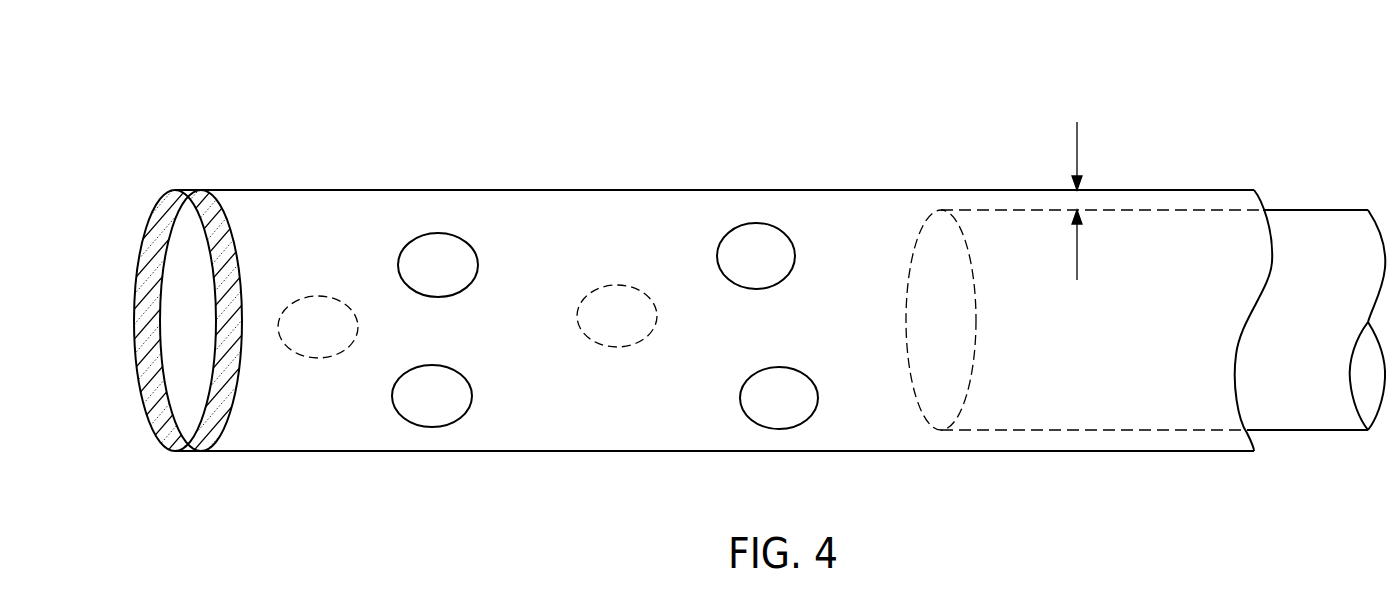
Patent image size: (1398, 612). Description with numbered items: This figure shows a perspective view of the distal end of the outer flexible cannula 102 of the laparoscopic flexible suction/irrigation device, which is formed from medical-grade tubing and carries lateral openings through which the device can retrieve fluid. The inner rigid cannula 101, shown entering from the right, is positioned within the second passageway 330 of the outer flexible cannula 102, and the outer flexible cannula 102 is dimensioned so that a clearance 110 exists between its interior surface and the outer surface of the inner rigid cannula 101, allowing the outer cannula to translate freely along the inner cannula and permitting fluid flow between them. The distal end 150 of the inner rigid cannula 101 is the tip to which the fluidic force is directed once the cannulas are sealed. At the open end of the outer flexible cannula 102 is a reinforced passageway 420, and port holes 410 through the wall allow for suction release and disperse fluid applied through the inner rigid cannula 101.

The inner rigid cannula 101 is at (1313, 210).
The outer flexible cannula 102 is at (538, 188).
The clearance 110 is at (1077, 143).
The distal end of the inner rigid cannula 150 is at (173, 188).
The second passageway 330 is at (186, 350).
The port holes 410 is at (753, 243).
The reinforced passageway 420 is at (200, 190).